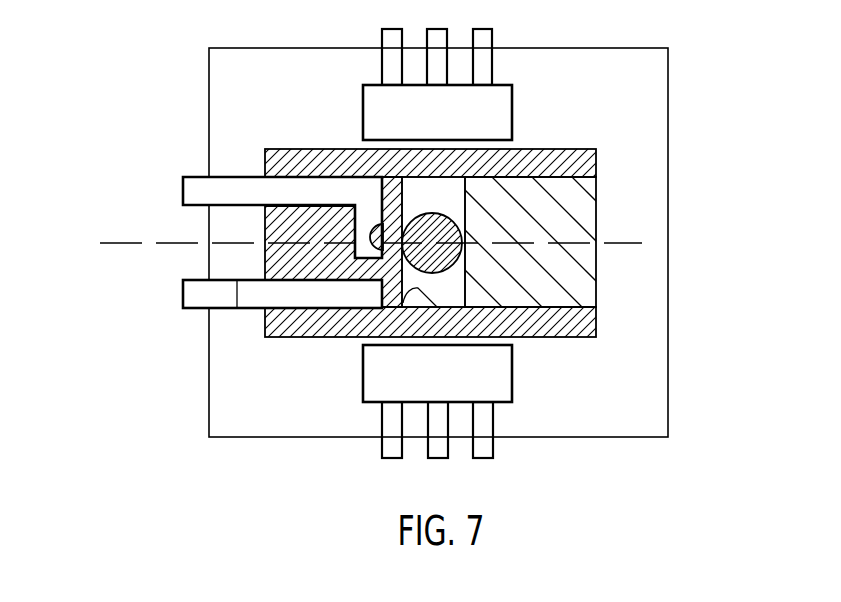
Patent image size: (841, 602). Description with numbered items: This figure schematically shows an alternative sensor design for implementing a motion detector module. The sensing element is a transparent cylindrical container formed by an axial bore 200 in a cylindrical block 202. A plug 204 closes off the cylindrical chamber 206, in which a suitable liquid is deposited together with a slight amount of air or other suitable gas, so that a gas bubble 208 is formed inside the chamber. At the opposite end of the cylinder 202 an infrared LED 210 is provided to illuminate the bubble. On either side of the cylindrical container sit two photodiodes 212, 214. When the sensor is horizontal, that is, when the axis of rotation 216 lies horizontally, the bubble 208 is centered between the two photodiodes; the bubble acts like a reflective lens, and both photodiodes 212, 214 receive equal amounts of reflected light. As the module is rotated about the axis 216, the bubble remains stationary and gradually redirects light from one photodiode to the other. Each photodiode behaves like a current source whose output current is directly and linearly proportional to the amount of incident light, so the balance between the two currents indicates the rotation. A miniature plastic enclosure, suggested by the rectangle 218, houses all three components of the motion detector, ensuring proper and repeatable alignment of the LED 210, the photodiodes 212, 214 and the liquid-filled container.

The axial bore 200 is at (362, 325).
The cylindrical block 202 is at (272, 163).
The plug 204 is at (590, 222).
The cylindrical chamber 206 is at (417, 206).
The gas bubble 208 is at (462, 232).
The infrared LED 210 is at (383, 250).
The photodiode 212 is at (363, 110).
The photodiode 214 is at (362, 389).
The axis of rotation 216 is at (190, 243).
The plastic enclosure 218 is at (668, 253).